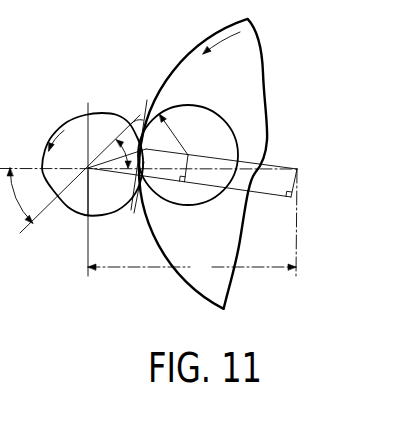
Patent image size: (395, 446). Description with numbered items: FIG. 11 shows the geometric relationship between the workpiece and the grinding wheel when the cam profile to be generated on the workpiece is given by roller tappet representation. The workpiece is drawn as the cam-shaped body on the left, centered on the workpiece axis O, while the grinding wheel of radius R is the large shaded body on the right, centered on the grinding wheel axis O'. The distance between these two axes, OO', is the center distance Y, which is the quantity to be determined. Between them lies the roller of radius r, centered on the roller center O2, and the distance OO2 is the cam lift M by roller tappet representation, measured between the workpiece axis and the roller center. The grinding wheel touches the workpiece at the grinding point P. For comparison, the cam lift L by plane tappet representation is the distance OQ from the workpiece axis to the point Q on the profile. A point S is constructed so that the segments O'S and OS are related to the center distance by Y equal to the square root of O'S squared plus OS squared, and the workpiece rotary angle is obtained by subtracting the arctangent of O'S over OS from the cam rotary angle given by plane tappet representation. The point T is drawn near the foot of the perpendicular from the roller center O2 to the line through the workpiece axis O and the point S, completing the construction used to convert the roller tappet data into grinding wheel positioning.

The workpiece axis O is at (92, 164).
The cam lift by plane tappet representation L is at (98, 192).
The grinding point P is at (192, 146).
The roller center O2 is at (188, 155).
The radius of roller r is at (173, 133).
The point T is at (189, 187).
The cam lift by roller tappet representation M is at (177, 168).
The grinding wheel axis O' is at (307, 212).
The point S is at (286, 198).
The point Q is at (144, 192).
The distance between the axes of workpiece and grinding wheel Y is at (192, 266).
The radius of grinding wheel R is at (297, 169).